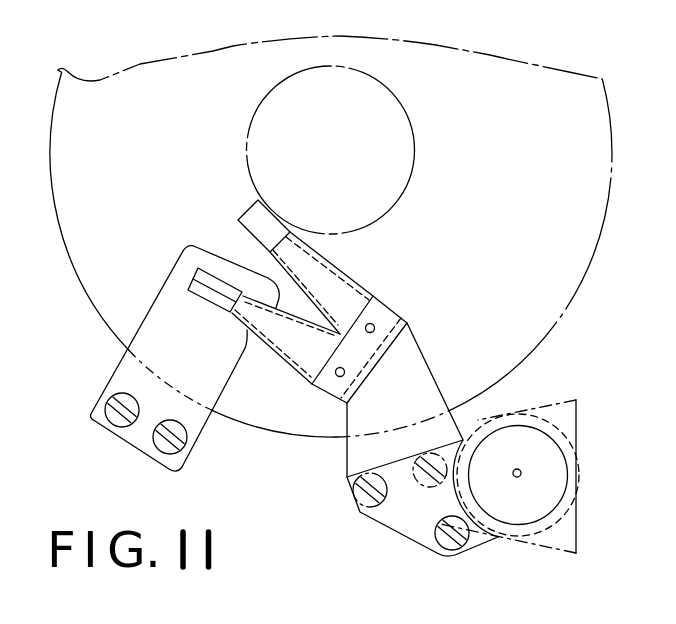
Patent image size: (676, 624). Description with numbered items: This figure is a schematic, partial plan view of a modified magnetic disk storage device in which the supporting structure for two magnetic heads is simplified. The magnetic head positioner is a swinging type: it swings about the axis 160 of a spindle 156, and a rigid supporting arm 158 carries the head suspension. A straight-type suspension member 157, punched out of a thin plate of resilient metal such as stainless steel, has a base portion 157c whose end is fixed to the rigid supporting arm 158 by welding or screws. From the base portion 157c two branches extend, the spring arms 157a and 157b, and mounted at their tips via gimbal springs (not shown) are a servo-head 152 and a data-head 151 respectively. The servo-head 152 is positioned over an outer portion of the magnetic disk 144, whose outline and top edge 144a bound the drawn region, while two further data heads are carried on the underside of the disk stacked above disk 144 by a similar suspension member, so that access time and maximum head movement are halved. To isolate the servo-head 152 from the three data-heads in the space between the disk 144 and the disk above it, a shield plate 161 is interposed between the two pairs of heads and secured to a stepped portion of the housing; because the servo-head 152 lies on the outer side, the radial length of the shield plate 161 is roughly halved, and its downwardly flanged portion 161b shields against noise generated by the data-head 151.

The magnetic disk 144 is at (557, 316).
The housing top edge 144a is at (238, 55).
The data-head 151 is at (248, 209).
The servo-head 152 is at (175, 268).
The spindle 156 is at (557, 440).
The suspension member 157 is at (364, 319).
The spring arm 157a is at (278, 336).
The spring arm 157b is at (347, 297).
The base portion 157c is at (377, 296).
The rigid supporting arm 158 is at (347, 477).
The axis 160 is at (521, 473).
The shield plate 161 is at (184, 359).
The downwardly flanged portion 161b is at (279, 300).